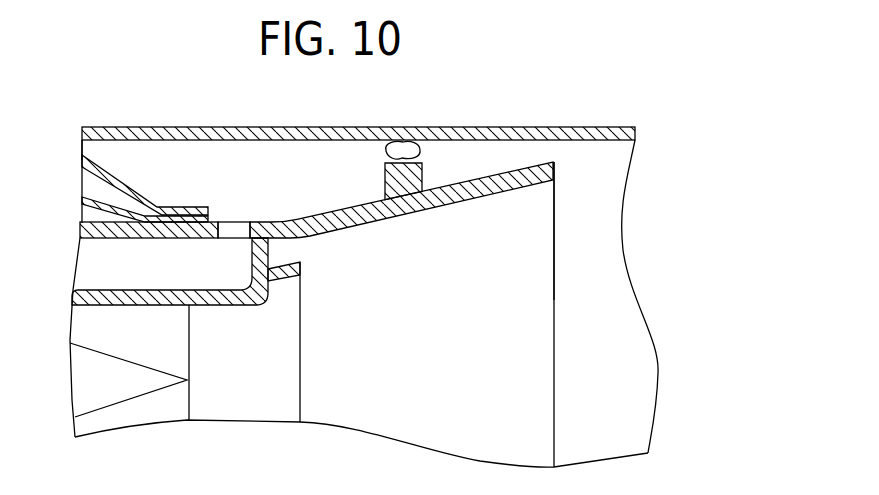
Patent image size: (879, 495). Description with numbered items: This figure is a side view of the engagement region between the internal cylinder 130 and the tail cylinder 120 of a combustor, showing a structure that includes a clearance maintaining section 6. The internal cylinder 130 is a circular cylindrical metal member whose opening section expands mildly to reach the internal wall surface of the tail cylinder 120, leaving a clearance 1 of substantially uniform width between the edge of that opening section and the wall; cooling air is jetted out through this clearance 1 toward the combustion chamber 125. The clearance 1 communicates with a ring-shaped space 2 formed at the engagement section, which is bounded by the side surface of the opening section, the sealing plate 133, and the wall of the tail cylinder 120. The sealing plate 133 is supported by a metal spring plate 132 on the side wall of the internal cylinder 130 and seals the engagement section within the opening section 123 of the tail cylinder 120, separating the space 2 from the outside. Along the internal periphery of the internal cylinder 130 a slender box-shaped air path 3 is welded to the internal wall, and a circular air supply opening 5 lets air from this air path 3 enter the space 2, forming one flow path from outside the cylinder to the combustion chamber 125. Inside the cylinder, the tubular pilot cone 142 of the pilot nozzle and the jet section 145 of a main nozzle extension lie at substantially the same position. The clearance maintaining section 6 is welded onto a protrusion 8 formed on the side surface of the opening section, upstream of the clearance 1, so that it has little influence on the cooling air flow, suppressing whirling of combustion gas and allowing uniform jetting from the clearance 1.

The clearance 1 is at (551, 158).
The space 2 is at (218, 167).
The air path 3 is at (152, 283).
The air supply opening 5 is at (240, 226).
The clearance maintaining section 6 is at (398, 141).
The protrusion 8 is at (385, 182).
The tail cylinder 120 is at (300, 128).
The opening section of the tail cylinder 123 is at (555, 325).
The combustion chamber 125 is at (677, 128).
The internal cylinder 130 is at (362, 213).
The spring plate 132 is at (82, 205).
The sealing plate 133 is at (138, 195).
The pilot cone 142 is at (300, 383).
The jet section 145 is at (80, 383).